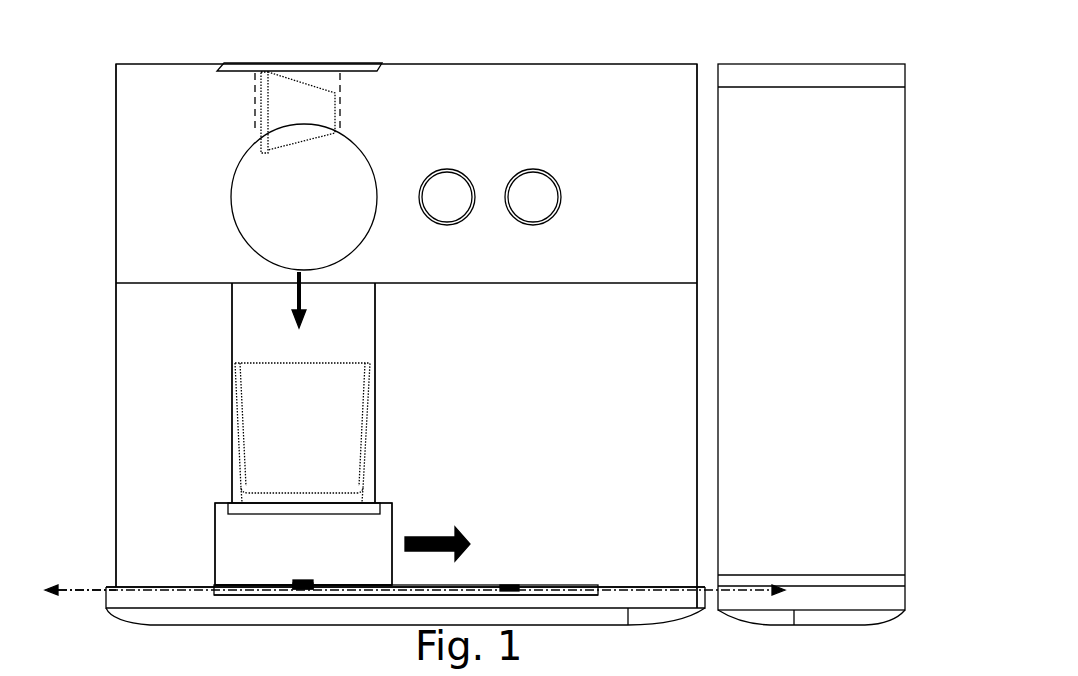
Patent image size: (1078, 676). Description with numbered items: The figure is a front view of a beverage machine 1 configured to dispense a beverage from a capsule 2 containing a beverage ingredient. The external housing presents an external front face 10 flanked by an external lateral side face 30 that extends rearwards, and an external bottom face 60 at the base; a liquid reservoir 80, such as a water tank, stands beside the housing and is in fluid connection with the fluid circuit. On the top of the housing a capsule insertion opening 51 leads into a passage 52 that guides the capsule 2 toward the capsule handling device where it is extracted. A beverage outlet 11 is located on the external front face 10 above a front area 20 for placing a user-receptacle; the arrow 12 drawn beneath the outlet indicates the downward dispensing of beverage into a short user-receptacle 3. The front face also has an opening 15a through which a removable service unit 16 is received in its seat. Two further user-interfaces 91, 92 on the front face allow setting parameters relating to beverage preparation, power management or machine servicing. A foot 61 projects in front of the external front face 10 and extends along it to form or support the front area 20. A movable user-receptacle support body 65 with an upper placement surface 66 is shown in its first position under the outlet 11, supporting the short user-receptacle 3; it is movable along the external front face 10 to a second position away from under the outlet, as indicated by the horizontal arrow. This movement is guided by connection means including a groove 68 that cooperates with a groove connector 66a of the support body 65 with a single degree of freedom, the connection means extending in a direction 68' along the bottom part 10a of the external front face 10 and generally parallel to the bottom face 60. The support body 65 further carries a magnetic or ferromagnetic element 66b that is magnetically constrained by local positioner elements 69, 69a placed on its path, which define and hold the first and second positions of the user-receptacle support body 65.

The machine 1 is at (88, 63).
The capsule 2 is at (307, 87).
The short user-receptacle 3 is at (360, 455).
The external front face 10 is at (140, 268).
The bottom part of external front face 10a is at (140, 573).
The beverage outlet 11 is at (297, 272).
The beverage flow direction 12 is at (300, 296).
The opening 15a is at (377, 335).
The removable service unit 16 is at (353, 350).
The front area 20 is at (190, 432).
The external lateral side face 30 is at (116, 202).
The capsule insertion opening 51 is at (285, 68).
The passage 52 is at (255, 92).
The external bottom face 60 is at (632, 625).
The foot 61 is at (113, 593).
The user-receptacle support body 65 is at (373, 533).
The upper placement surface 66 is at (218, 503).
The groove connector 66a is at (220, 582).
The magnetic and/or ferromagnetic element 66b is at (307, 580).
The groove 68 is at (425, 550).
The direction 68' is at (81, 628).
The local positioner element 69 is at (513, 587).
The magnetic and/or ferromagnetic local positioner element 69a is at (395, 597).
The liquid reservoir 80 is at (885, 498).
The further user-interface 91 is at (452, 188).
The further user-interface 92 is at (548, 187).